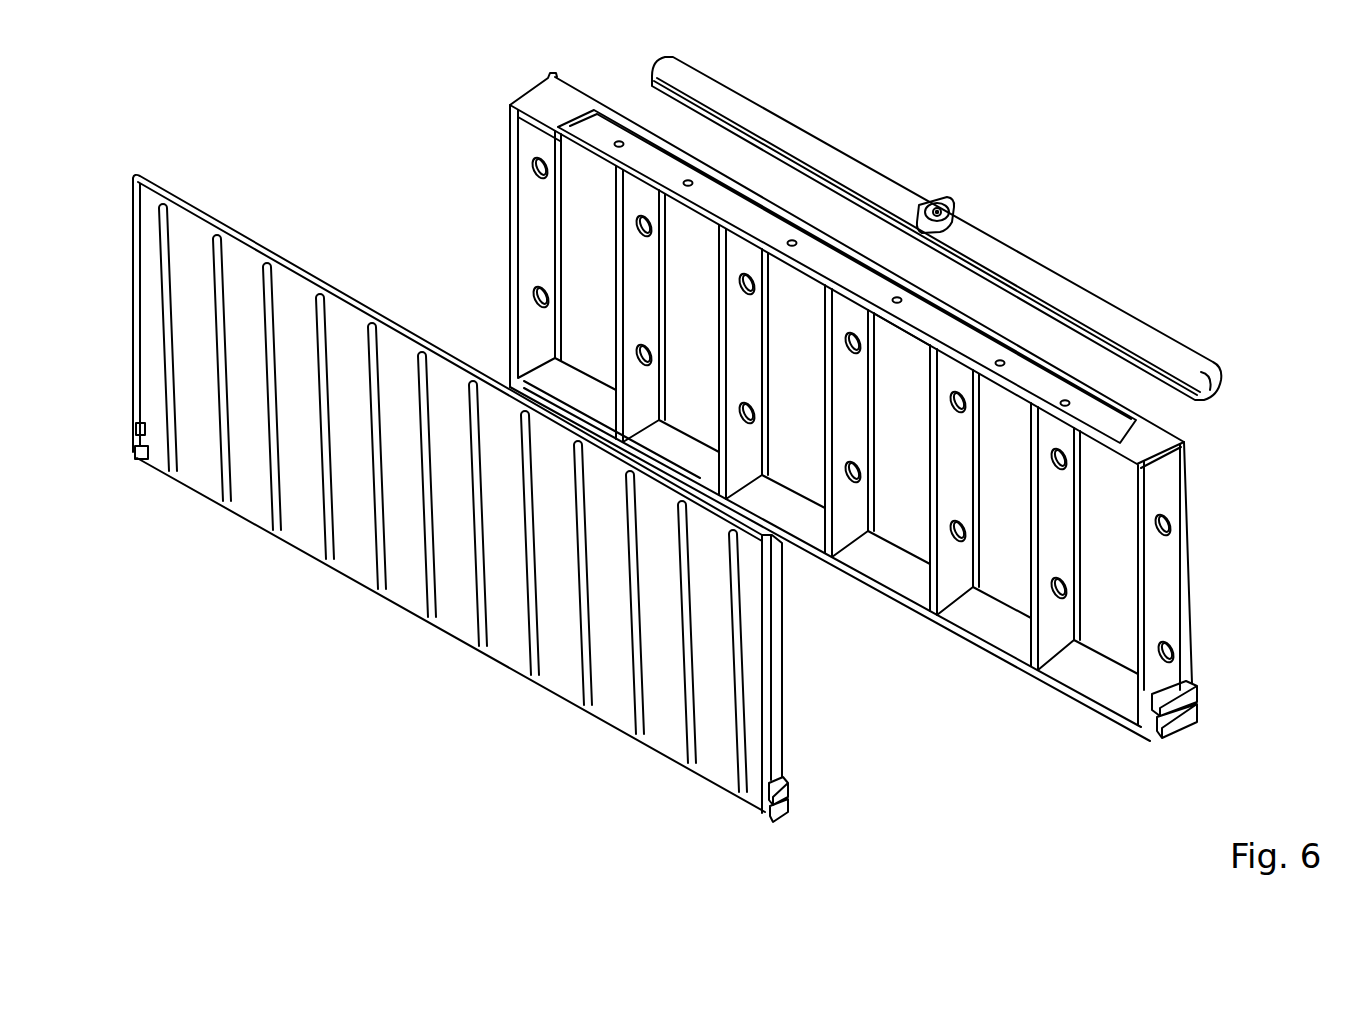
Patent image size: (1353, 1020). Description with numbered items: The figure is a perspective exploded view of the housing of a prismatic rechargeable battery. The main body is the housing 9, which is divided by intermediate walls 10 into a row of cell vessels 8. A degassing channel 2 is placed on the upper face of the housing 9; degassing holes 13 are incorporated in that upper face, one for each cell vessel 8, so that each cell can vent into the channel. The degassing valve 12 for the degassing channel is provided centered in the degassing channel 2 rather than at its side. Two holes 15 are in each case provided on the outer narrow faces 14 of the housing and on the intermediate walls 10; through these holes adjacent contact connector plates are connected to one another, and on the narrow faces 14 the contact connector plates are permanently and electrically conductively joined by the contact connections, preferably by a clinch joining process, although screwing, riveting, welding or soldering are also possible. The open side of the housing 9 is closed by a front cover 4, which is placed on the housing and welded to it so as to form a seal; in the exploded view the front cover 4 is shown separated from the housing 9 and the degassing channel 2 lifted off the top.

The degassing channel 2 is at (1030, 262).
The front cover 4 is at (497, 645).
The cell vessel 8 is at (903, 533).
The housing 9 is at (1192, 487).
The intermediate wall 10 is at (1033, 570).
The degassing valve 12 is at (943, 200).
The degassing hole 13 is at (620, 141).
The outer narrow face 14 is at (1168, 598).
The hole 15 is at (530, 299).